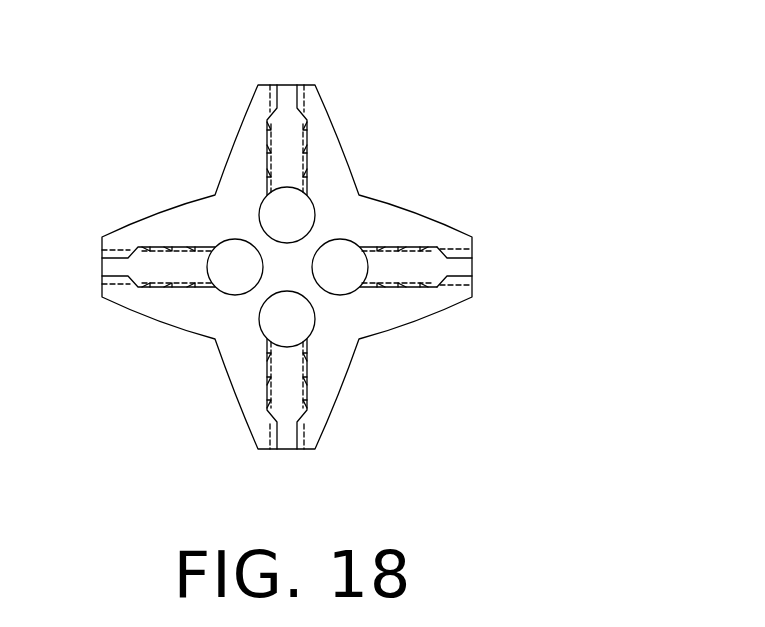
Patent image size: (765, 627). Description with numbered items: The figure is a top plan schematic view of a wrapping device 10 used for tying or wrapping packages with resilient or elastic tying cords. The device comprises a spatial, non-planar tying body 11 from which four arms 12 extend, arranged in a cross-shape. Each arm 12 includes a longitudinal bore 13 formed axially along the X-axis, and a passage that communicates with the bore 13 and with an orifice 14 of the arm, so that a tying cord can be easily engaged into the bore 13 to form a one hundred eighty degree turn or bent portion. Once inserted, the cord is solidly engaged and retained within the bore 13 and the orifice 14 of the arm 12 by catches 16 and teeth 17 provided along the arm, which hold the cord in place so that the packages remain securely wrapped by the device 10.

The wrapping device 10 is at (367, 95).
The tying body 11 is at (358, 195).
The arms 12 is at (233, 138).
The longitudinal bores 13 is at (290, 407).
The orifice 14 is at (303, 317).
The catches 16 is at (472, 277).
The teeth 17 is at (403, 247).